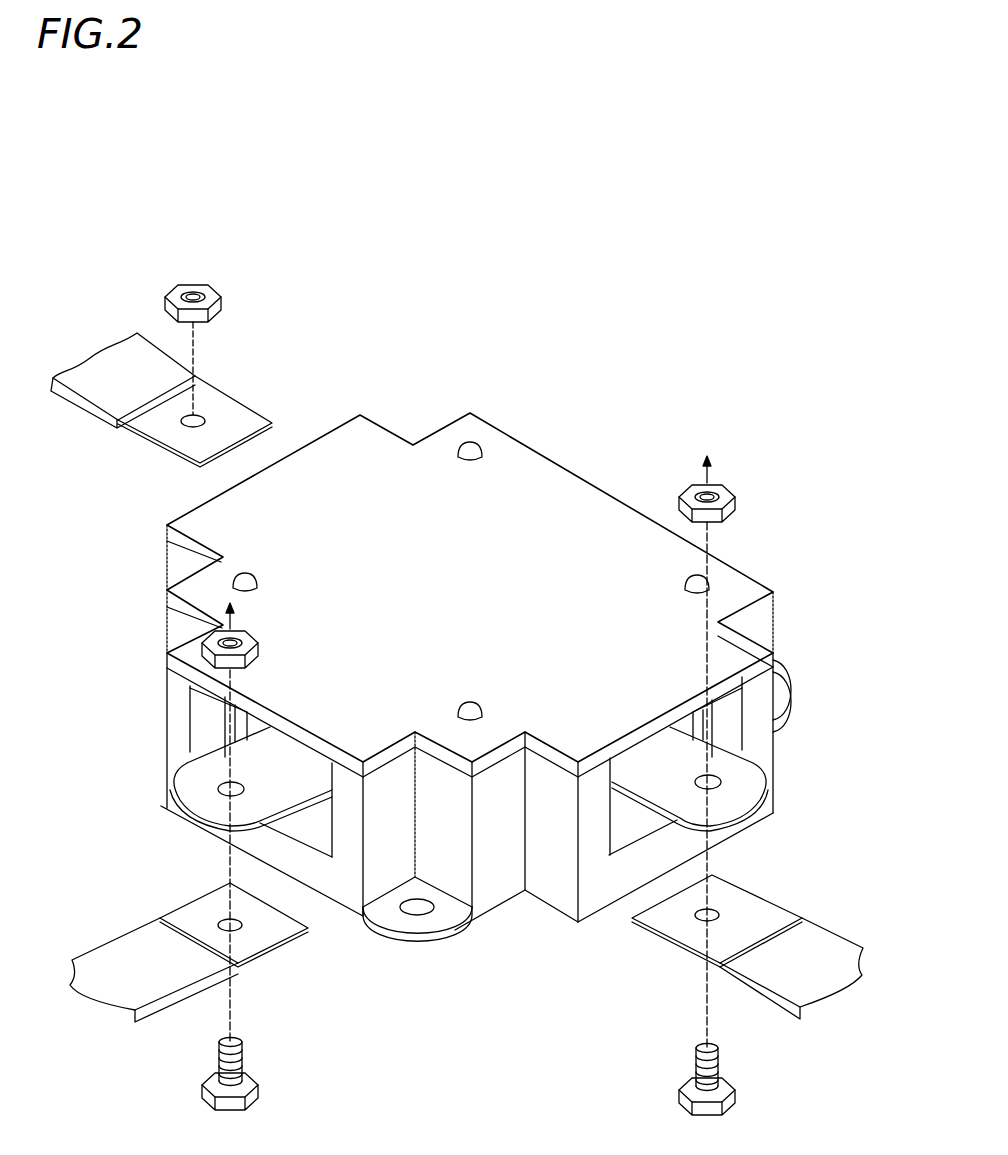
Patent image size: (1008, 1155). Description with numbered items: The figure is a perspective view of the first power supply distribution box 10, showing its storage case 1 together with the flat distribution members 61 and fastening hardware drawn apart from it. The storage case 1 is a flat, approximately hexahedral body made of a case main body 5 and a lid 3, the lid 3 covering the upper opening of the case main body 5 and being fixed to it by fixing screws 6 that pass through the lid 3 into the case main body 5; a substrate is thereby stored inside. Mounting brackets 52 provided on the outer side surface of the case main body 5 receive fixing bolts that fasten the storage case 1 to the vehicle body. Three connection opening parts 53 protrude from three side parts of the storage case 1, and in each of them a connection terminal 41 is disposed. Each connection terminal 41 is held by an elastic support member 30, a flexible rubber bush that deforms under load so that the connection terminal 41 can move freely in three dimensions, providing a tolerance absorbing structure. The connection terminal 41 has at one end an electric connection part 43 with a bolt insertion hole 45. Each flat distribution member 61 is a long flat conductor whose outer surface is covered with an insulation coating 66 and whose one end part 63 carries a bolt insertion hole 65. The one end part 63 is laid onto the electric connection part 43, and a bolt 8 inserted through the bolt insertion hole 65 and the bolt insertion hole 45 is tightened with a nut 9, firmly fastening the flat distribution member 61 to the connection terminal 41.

The first power supply distribution box 10 is at (498, 318).
The storage case 1 is at (670, 320).
The lid 3 is at (561, 491).
The case main body 5 is at (781, 629).
The fixing screw 6 is at (466, 448).
The bolt 8 is at (260, 1090).
The nut 9 is at (216, 290).
The elastic support member 30 is at (218, 718).
The connection terminal 41 is at (210, 757).
The electric connection part 43 is at (182, 806).
The bolt insertion hole 45 is at (242, 783).
The mounting bracket 52 is at (790, 670).
The connection opening part 53 is at (320, 850).
The flat distribution member 61 is at (181, 355).
The one end part 63 is at (170, 440).
The bolt insertion hole 65 is at (200, 413).
The insulation coating 66 is at (116, 384).